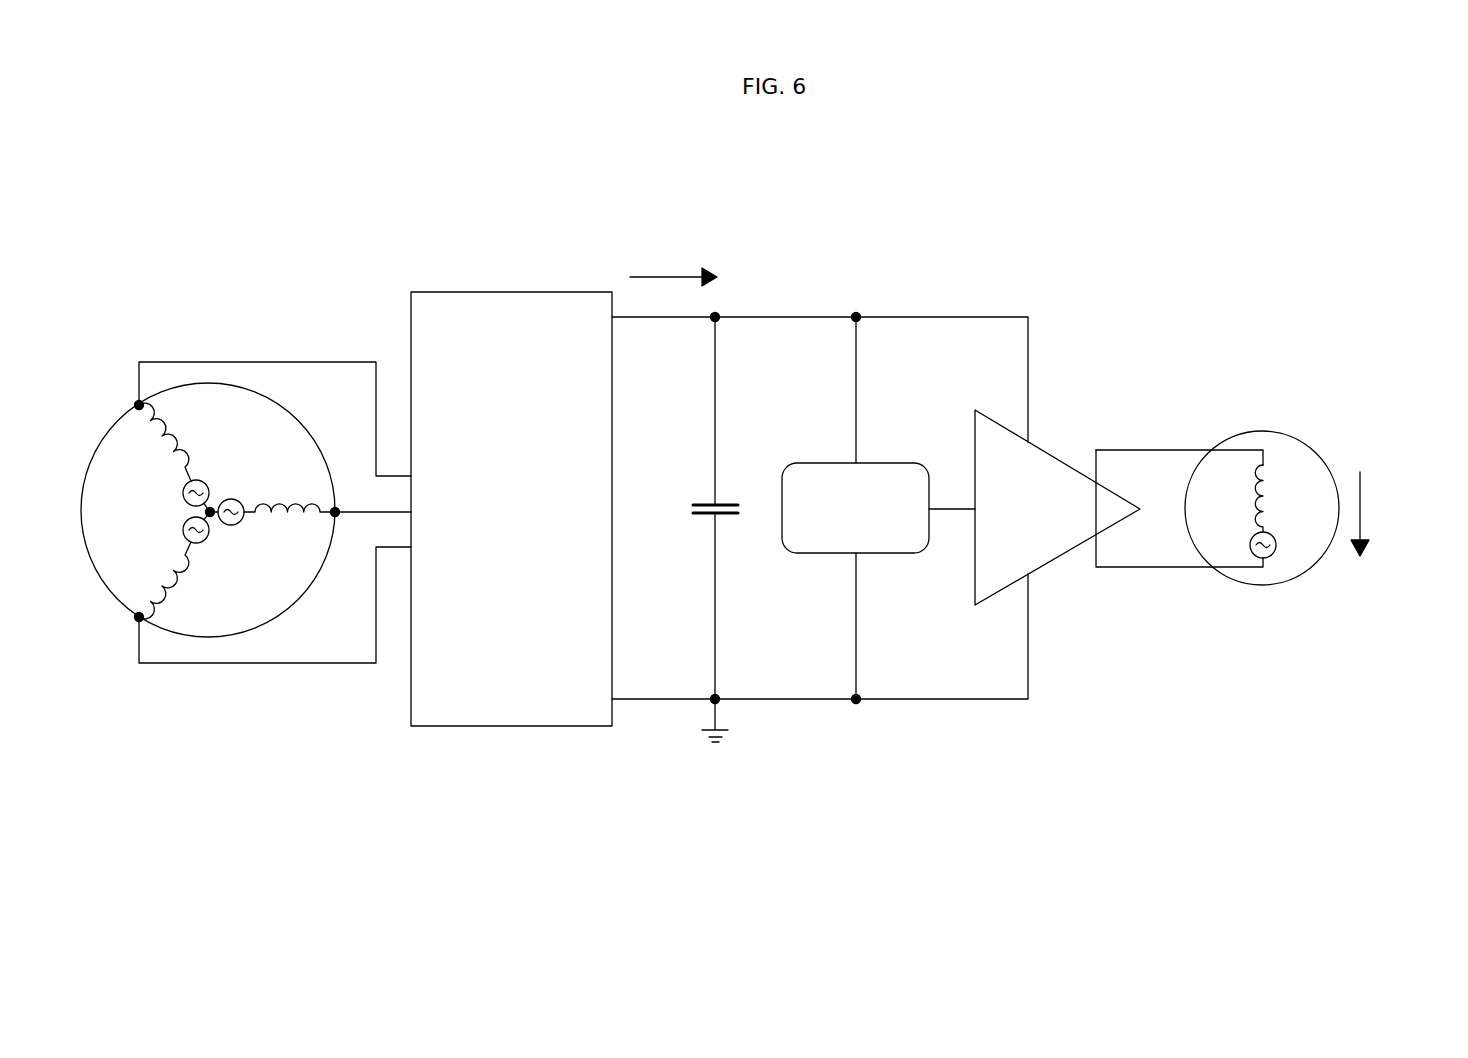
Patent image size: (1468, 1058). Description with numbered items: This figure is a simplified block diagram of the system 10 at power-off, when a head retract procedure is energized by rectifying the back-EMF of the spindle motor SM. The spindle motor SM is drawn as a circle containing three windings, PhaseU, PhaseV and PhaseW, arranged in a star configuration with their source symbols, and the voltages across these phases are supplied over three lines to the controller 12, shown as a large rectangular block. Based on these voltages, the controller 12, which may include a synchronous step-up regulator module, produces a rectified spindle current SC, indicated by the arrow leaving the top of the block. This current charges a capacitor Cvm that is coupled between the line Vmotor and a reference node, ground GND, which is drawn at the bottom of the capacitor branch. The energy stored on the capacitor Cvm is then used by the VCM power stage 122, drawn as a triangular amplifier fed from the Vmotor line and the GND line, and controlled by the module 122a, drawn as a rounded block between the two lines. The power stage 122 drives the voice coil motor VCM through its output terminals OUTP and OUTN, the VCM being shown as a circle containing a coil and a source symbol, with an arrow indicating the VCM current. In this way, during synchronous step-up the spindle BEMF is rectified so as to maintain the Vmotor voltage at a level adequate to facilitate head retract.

The motor drive system 10 is at (1100, 248).
The controller 12 is at (504, 707).
The VCM power stage 122 is at (1053, 547).
The module 122a is at (818, 540).
The spindle motor SM is at (202, 673).
The voice coil motor VCM is at (1273, 598).
The capacitor Cvm is at (702, 502).
The ground GND is at (717, 737).
The spindle current SC is at (673, 269).
The Vmotor line Vmotor is at (856, 490).
The positive output terminal OUTP is at (1162, 450).
The negative output terminal OUTN is at (1135, 567).
The phase U winding PhaseU is at (272, 499).
The phase V winding PhaseV is at (153, 457).
The phase W winding PhaseW is at (205, 565).